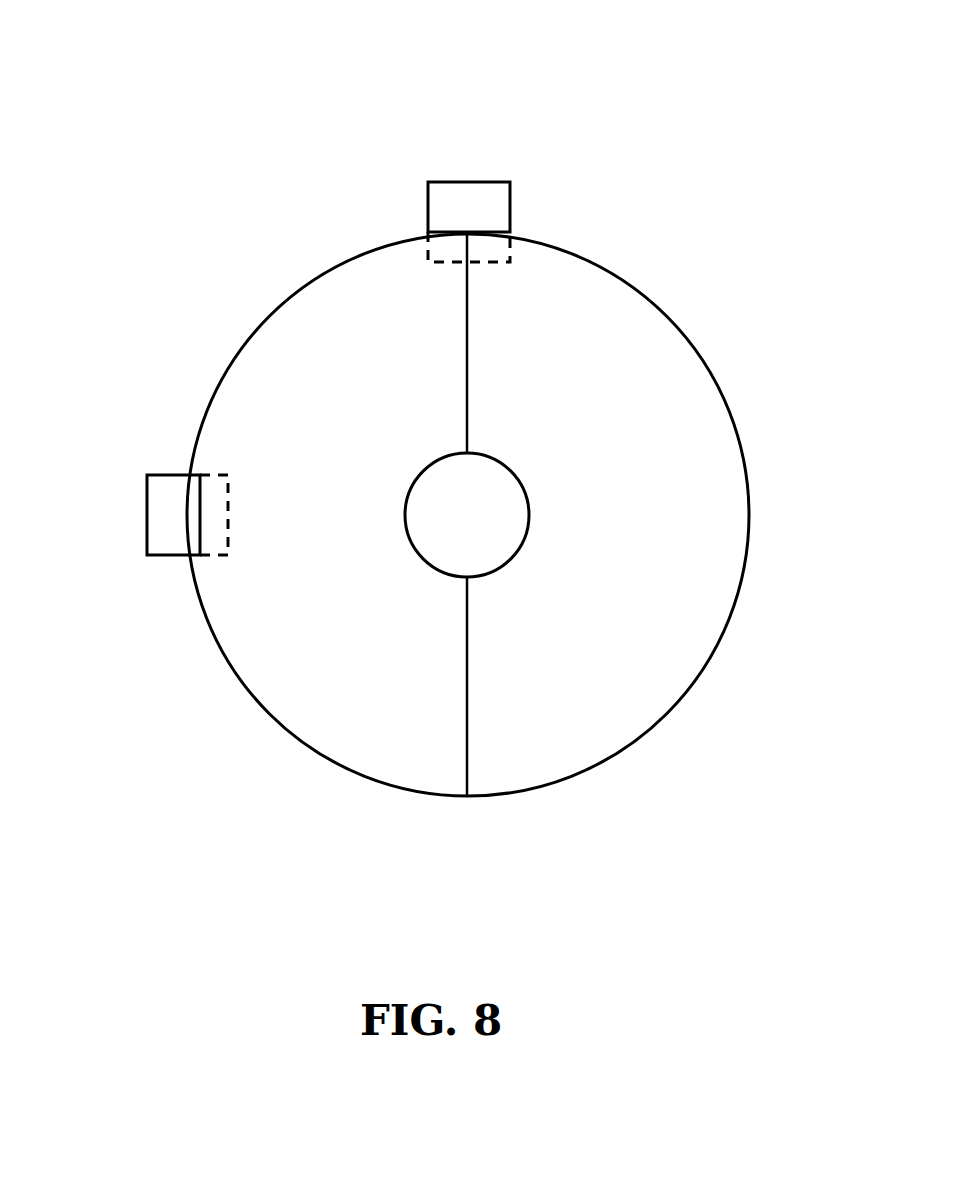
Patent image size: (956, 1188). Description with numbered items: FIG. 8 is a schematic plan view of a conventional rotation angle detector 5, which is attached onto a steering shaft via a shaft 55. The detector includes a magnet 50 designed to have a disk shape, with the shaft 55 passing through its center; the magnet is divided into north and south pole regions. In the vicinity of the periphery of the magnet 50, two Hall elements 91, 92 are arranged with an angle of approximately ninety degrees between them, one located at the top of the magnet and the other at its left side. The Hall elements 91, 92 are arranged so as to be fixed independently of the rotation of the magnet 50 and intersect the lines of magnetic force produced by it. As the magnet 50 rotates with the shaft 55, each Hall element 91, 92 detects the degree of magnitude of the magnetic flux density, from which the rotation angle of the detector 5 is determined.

The rotation angle detector 5 is at (720, 158).
The magnet 50 is at (690, 330).
The shaft 55 is at (510, 563).
The Hall element 91 is at (153, 555).
The Hall element 92 is at (467, 182).